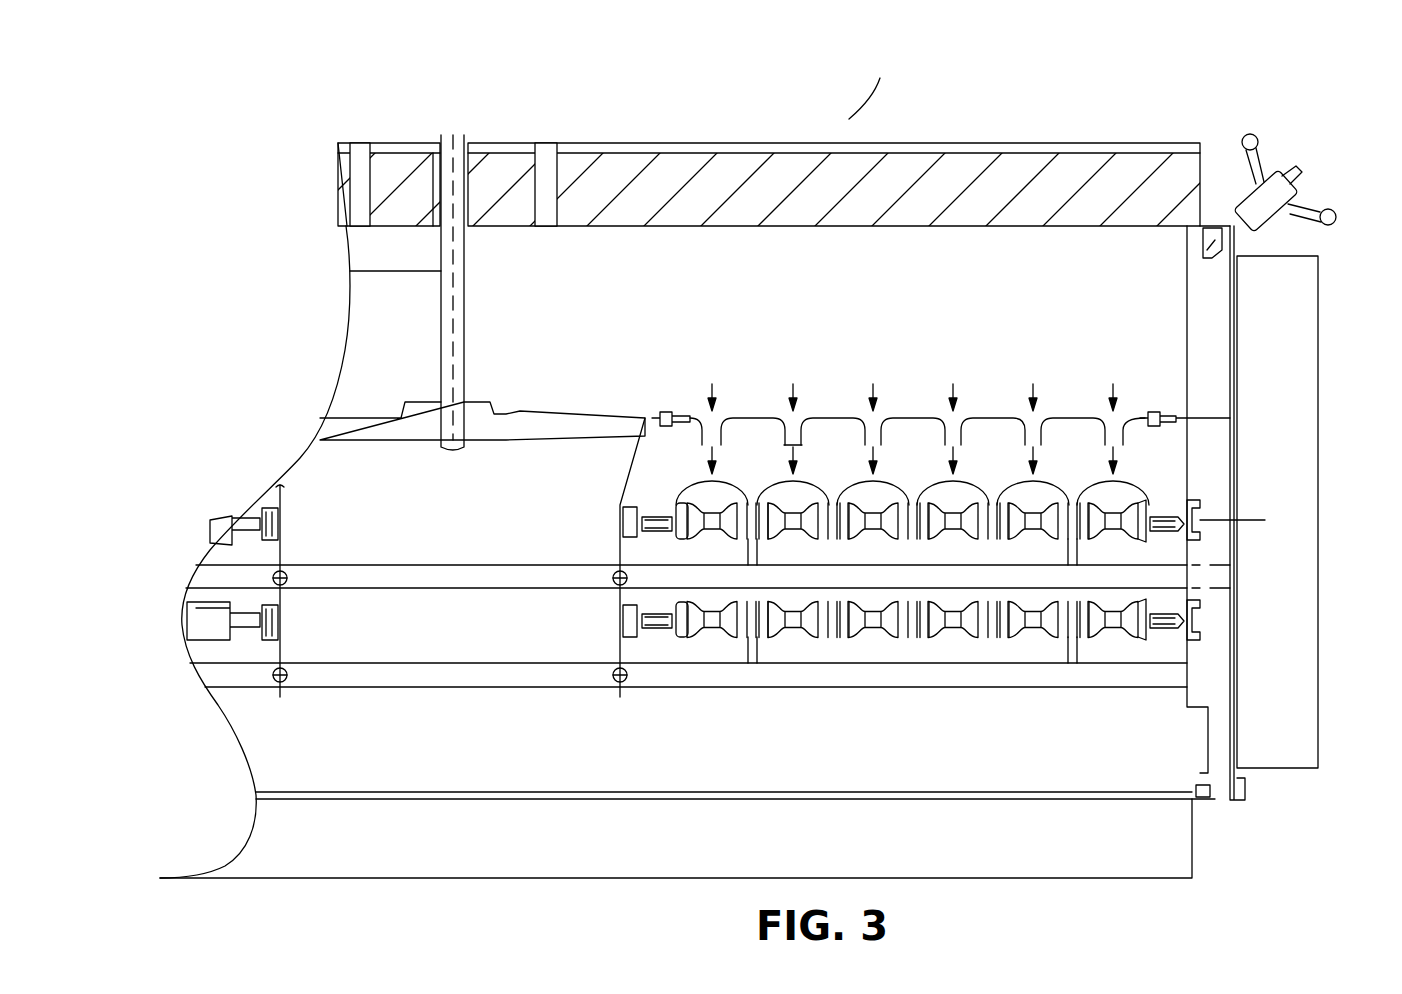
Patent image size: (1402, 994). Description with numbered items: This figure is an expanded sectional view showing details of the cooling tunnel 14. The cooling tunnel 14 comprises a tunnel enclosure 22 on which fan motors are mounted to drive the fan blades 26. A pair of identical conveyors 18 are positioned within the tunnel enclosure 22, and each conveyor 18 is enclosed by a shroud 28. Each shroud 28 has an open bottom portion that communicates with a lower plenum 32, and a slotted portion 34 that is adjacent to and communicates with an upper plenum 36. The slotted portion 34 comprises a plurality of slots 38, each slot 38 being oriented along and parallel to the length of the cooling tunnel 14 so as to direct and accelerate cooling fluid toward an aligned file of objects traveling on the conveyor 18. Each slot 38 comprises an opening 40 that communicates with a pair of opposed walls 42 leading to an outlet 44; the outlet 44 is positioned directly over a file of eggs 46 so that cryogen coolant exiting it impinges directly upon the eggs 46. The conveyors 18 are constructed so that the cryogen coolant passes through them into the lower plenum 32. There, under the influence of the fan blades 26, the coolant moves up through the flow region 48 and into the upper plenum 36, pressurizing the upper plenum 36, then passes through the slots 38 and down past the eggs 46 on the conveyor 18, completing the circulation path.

The cooling tunnel 14 is at (842, 127).
The tunnel enclosure 22 is at (965, 168).
The upper plenum 36 is at (832, 289).
The slot 38 is at (800, 362).
The opening 40 is at (797, 423).
The slotted portion 34 is at (1072, 418).
The fan blades 26 is at (540, 423).
The opposed walls 42 is at (786, 430).
The outlet 44 is at (800, 447).
The shroud 28 is at (288, 492).
The flow region 48 is at (422, 548).
The eggs 46 is at (784, 498).
The conveyor 18 is at (1135, 548).
The lower plenum 32 is at (449, 764).